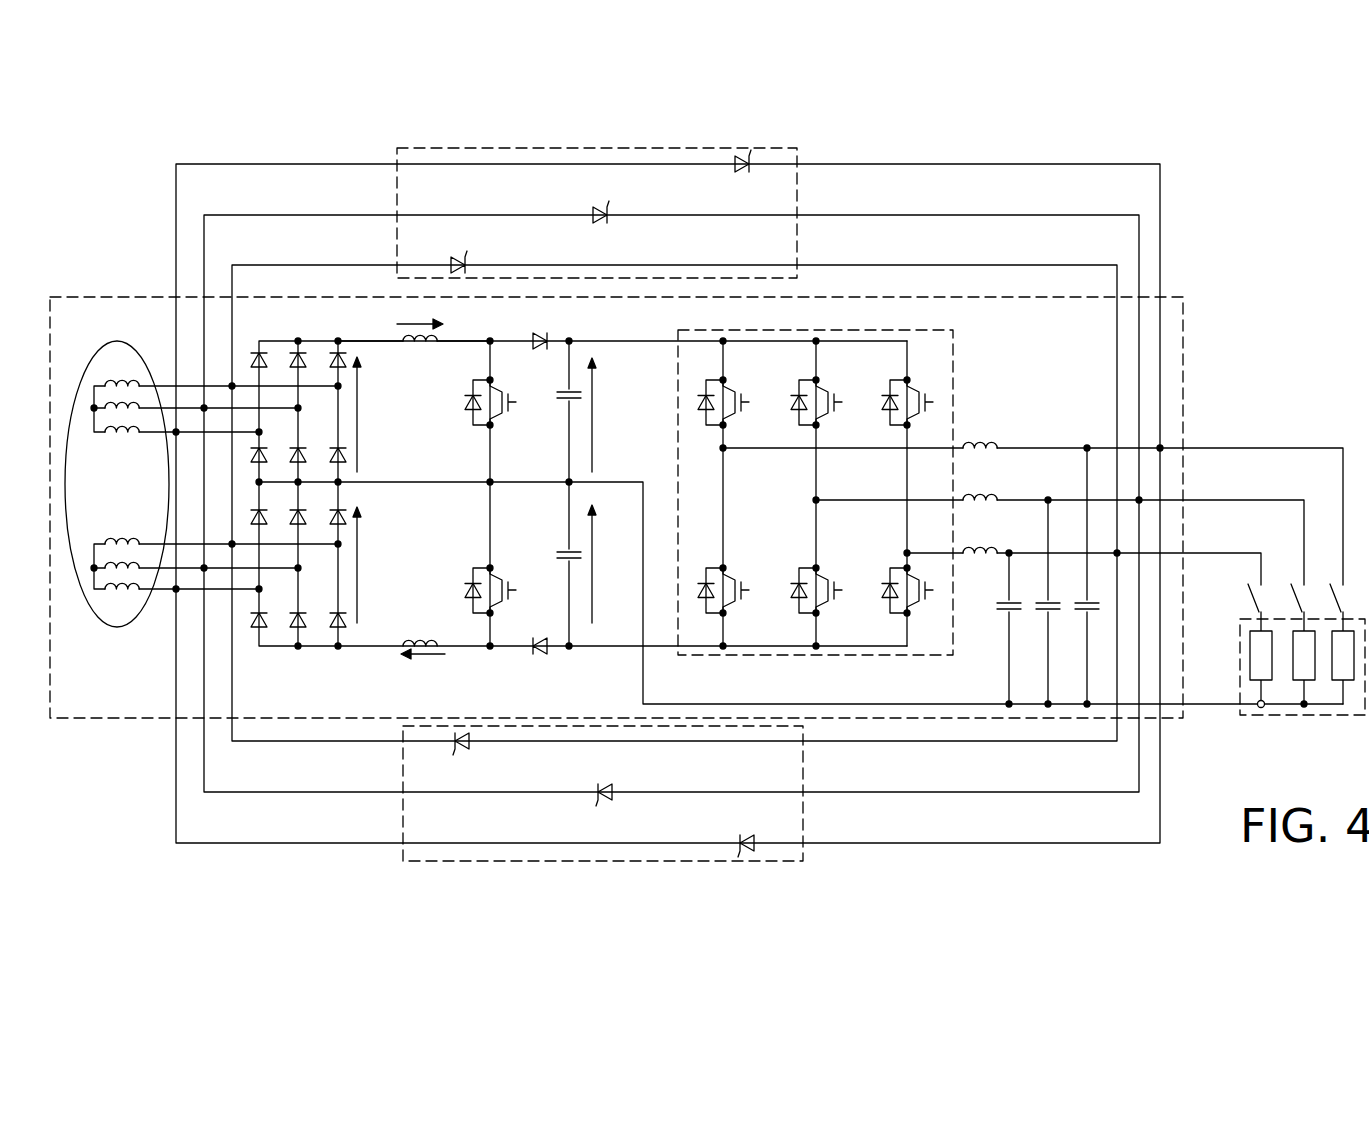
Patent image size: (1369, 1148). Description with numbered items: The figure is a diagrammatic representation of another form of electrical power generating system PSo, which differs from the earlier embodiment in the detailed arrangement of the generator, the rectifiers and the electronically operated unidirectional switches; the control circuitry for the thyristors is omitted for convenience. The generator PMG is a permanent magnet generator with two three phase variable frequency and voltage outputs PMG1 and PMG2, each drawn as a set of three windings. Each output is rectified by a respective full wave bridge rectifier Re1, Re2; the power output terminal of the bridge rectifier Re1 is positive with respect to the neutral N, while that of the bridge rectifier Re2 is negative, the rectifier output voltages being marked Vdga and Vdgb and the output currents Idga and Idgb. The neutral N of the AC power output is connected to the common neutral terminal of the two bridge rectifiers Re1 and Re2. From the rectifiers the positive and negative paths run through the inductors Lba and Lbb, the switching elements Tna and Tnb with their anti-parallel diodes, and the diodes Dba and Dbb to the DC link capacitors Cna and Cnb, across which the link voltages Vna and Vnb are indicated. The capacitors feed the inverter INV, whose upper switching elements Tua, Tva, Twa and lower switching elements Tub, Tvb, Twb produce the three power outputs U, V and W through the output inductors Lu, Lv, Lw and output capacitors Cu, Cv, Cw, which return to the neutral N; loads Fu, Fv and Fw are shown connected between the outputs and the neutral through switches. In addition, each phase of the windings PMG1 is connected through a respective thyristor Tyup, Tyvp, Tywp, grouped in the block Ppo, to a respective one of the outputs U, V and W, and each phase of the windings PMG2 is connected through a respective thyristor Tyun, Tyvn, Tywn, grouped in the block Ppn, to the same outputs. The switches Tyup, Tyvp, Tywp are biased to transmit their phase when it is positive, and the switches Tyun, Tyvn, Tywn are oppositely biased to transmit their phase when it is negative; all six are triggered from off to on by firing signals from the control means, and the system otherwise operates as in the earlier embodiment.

The power supply system PSo is at (1183, 330).
The positive-side bypass thyristor unit Ppo is at (766, 148).
The negative-side bypass thyristor unit Ppn is at (795, 861).
The inverter INV is at (815, 479).
The permanent magnet generator PMG is at (197, 485).
The first three phase generator windings PMG1 is at (118, 375).
The second three phase generator windings PMG2 is at (124, 595).
The first full wave bridge rectifier Re1 is at (579, 395).
The second full wave bridge rectifier Re2 is at (579, 582).
The first rectifier output voltage Vdga is at (383, 414).
The second rectifier output voltage Vdgb is at (383, 565).
The first rectifier output current Idga is at (420, 315).
The second rectifier output current Idgb is at (423, 663).
The first inductor Lba is at (414, 350).
The second inductor Lbb is at (420, 630).
The first switching element Tna is at (498, 411).
The second switching element Tnb is at (498, 565).
The first diode Dba is at (540, 330).
The second diode Dbb is at (542, 634).
The first DC link capacitor Cna is at (555, 411).
The second DC link capacitor Cnb is at (555, 565).
The first DC link voltage Vna is at (609, 415).
The second DC link voltage Vnb is at (609, 564).
The neutral N is at (801, 579).
The U-phase upper switching element Tua is at (729, 393).
The V-phase upper switching element Tva is at (822, 419).
The W-phase upper switching element Twa is at (914, 447).
The U-phase lower switching element Tub is at (717, 548).
The V-phase lower switching element Tvb is at (809, 574).
The W-phase lower switching element Twb is at (901, 593).
The power output U is at (1031, 503).
The power output V is at (1058, 530).
The power output W is at (1082, 557).
The U-phase output inductor Lu is at (980, 432).
The V-phase output inductor Lv is at (980, 484).
The W-phase output inductor Lw is at (980, 538).
The U-phase output capacitor Cu is at (1078, 576).
The V-phase output capacitor Cv is at (1040, 602).
The W-phase output capacitor Cw is at (997, 628).
The U-phase load Fu is at (1348, 644).
The V-phase load Fv is at (1311, 645).
The W-phase load Fw is at (1269, 646).
The electronically operated unidirectional switch Tyup is at (741, 173).
The electronically operated unidirectional switch Tyvp is at (598, 222).
The electronically operated unidirectional switch Tywp is at (457, 249).
The electronically operated unidirectional switch Tyun is at (746, 832).
The electronically operated unidirectional switch Tyvn is at (605, 782).
The electronically operated unidirectional switch Tywn is at (462, 753).